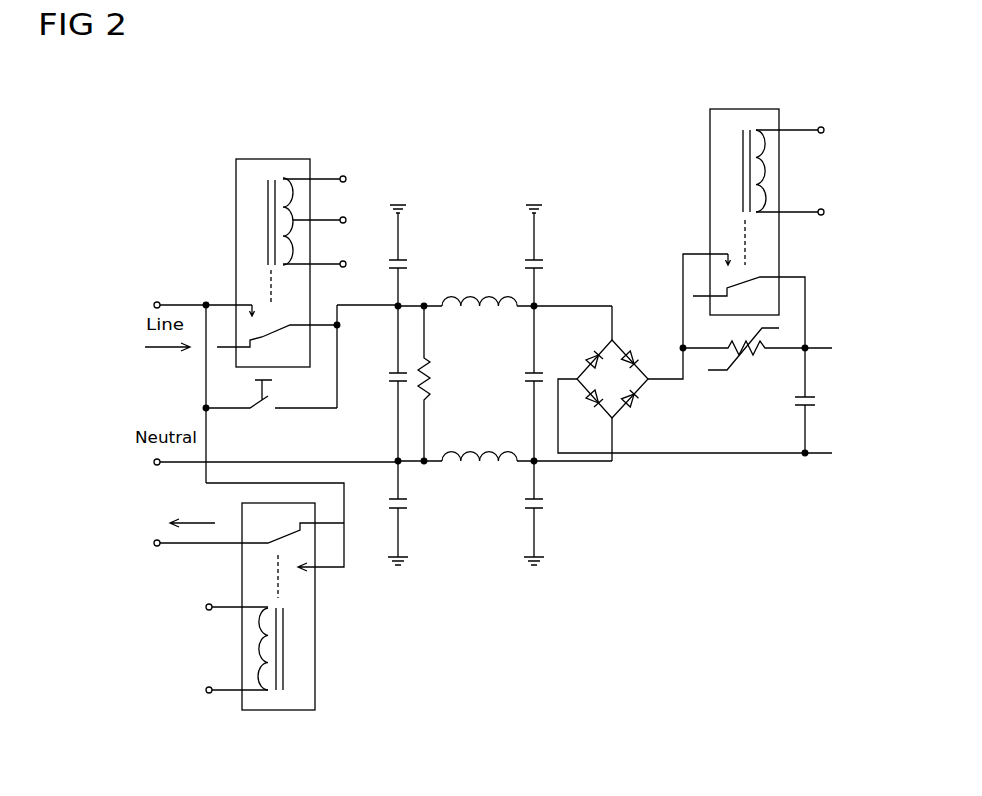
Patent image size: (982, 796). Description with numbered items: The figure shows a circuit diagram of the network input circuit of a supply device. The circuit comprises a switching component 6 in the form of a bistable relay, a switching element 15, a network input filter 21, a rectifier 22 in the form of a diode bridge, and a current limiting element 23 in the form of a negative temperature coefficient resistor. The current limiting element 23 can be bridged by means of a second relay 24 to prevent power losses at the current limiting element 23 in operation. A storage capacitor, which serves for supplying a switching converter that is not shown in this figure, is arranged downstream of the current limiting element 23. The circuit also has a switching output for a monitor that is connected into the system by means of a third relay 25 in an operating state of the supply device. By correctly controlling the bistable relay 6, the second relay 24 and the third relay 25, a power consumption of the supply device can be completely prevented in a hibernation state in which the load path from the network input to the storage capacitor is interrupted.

The switching component 6 is at (226, 146).
The switching element 15 is at (291, 435).
The network input filter 21 is at (478, 230).
The rectifier 22 is at (632, 489).
The current limiting element 23 is at (769, 489).
The second relay 24 is at (679, 124).
The third relay 25 is at (340, 683).